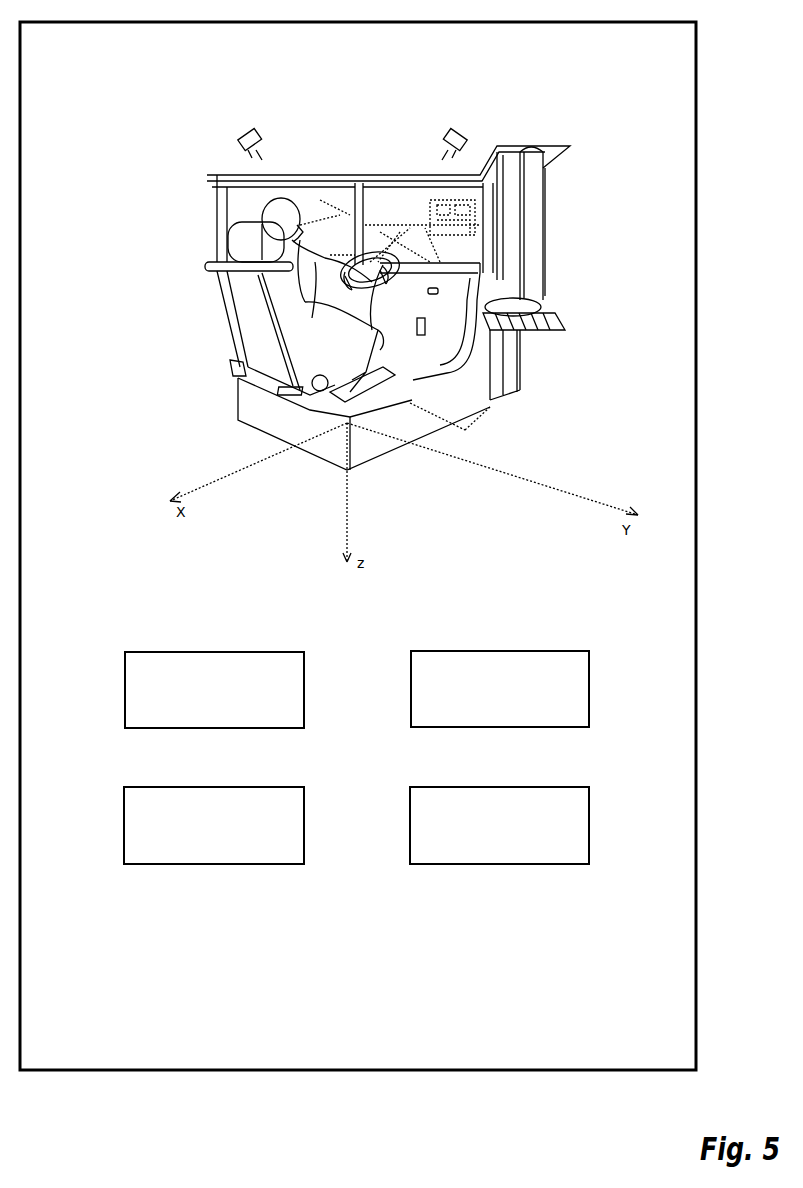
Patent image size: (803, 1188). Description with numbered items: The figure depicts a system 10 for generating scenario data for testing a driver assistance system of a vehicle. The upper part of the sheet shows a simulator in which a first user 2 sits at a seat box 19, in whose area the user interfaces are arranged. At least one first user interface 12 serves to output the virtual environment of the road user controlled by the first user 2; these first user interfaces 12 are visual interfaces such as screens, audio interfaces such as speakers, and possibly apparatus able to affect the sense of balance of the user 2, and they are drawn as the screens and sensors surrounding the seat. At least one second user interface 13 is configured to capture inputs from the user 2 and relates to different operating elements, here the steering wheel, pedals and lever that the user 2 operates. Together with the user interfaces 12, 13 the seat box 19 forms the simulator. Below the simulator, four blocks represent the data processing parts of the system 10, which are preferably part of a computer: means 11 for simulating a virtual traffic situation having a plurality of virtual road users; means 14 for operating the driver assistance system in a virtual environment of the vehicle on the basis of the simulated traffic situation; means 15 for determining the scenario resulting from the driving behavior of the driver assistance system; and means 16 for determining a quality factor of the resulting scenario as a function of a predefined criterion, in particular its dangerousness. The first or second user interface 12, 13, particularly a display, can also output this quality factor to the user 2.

The system 10 is at (698, 183).
The first user 2 is at (263, 211).
The first user interface 12 is at (258, 172).
The second user interface 13 is at (380, 298).
The seat box 19 is at (233, 407).
The means for simulating a virtual traffic situation 11 is at (202, 705).
The means for operating the driver assistance system 14 is at (487, 704).
The means for determining a scenario 15 is at (202, 841).
The means for determining a quality factor 16 is at (487, 841).